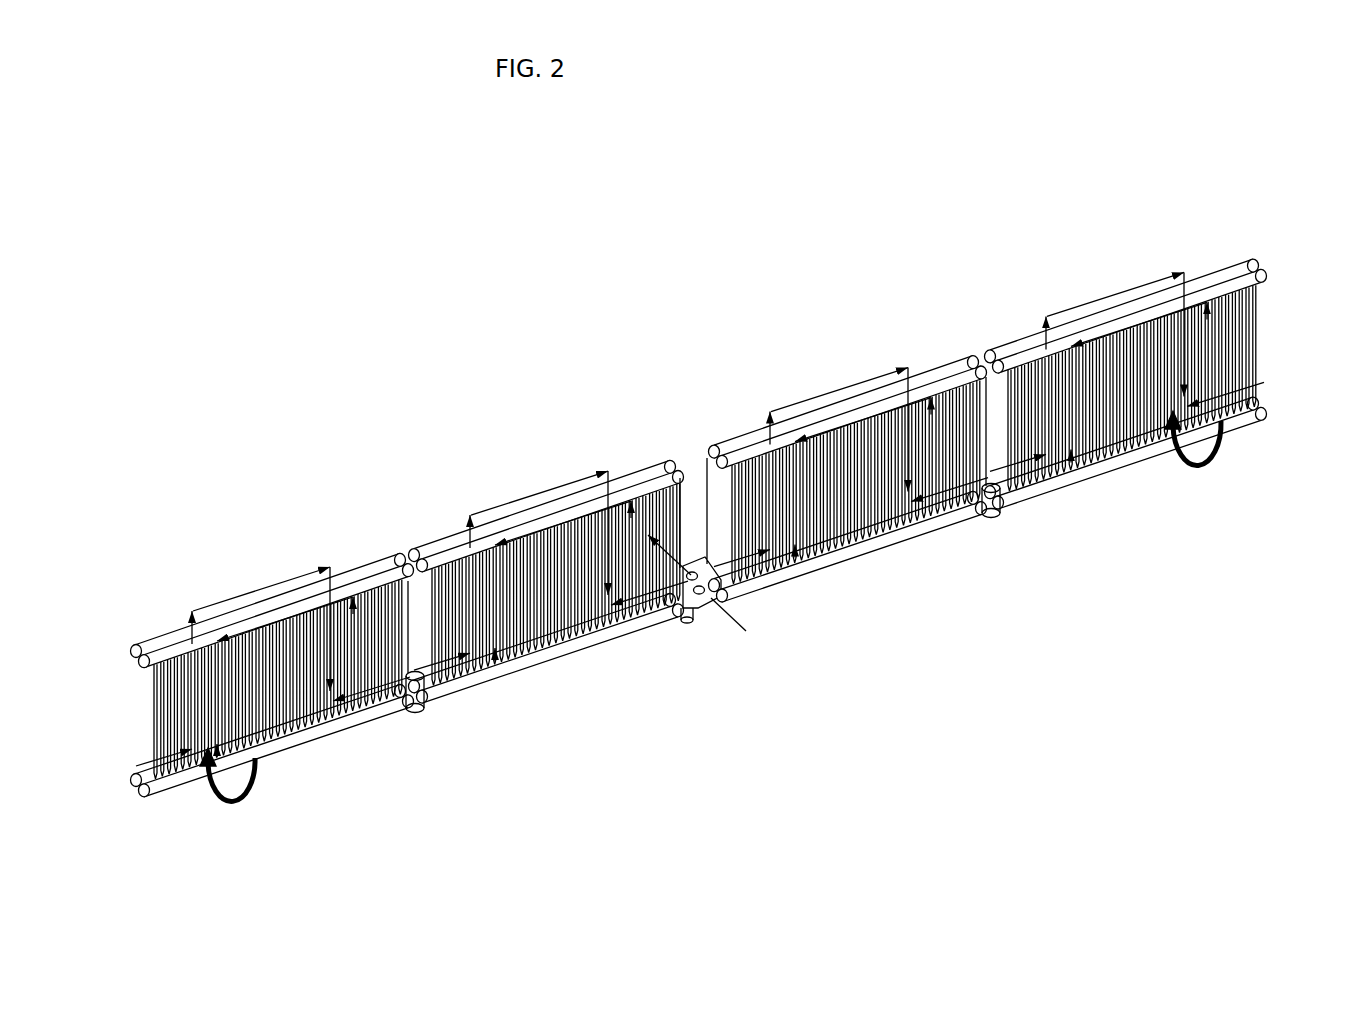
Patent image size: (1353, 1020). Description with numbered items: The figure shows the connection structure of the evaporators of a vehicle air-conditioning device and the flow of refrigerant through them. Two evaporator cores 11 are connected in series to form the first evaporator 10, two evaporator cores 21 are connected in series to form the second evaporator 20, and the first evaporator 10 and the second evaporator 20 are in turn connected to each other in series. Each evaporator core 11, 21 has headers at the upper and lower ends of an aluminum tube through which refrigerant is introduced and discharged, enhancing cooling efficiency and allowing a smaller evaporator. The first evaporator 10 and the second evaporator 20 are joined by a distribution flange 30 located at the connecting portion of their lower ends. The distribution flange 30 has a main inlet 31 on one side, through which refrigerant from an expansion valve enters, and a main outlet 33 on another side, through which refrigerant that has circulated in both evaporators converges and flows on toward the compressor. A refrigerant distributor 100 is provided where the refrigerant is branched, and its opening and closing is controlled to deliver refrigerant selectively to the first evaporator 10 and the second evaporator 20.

The first evaporator 10 is at (988, 371).
The evaporator core 11 is at (862, 507).
The second evaporator 20 is at (410, 574).
The evaporator core 21 is at (280, 708).
The distribution flange 30 is at (732, 572).
The main inlet 31 is at (697, 588).
The main outlet 33 is at (684, 560).
The refrigerant distributor 100 is at (699, 476).